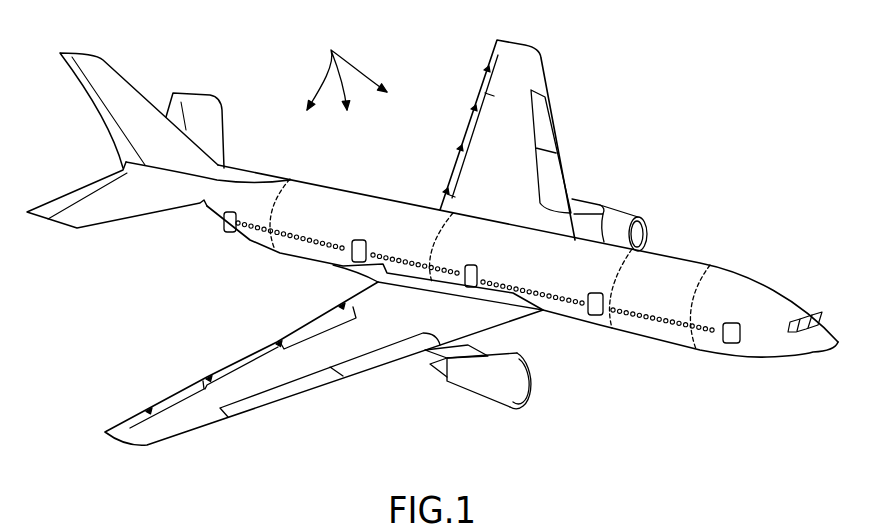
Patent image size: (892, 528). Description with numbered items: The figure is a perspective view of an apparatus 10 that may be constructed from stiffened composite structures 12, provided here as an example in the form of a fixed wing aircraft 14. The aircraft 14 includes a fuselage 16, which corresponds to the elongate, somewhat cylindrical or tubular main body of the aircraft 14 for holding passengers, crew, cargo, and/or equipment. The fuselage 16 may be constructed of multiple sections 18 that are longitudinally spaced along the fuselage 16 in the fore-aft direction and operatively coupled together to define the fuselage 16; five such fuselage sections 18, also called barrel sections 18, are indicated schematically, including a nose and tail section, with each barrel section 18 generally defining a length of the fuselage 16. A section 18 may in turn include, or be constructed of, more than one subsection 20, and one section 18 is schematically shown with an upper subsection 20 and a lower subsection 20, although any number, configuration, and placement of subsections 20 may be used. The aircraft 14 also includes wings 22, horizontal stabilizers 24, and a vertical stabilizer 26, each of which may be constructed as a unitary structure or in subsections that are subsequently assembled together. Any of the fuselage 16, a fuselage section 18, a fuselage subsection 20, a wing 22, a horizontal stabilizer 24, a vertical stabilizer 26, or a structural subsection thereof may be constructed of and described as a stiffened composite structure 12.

The apparatus 10 is at (436, 246).
The stiffened composite structure 12 is at (331, 50).
The aircraft 14 is at (713, 123).
The fuselage 16 is at (600, 243).
The fuselage section 18 is at (300, 258).
The subsection 20 is at (703, 283).
The wing 22 is at (543, 73).
The horizontal stabilizer 24 is at (220, 132).
The vertical stabilizer 26 is at (138, 82).